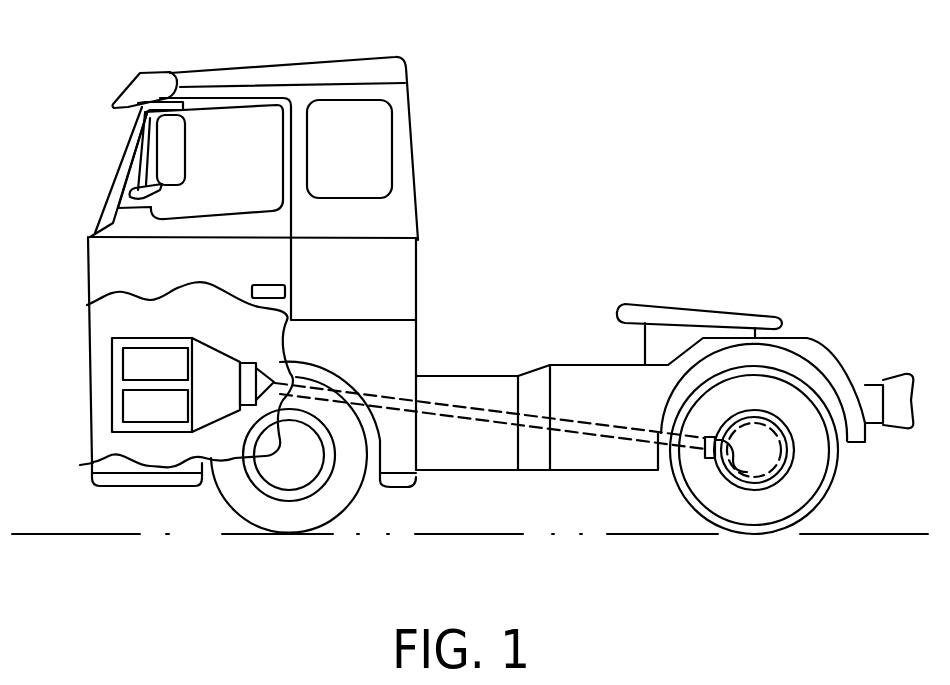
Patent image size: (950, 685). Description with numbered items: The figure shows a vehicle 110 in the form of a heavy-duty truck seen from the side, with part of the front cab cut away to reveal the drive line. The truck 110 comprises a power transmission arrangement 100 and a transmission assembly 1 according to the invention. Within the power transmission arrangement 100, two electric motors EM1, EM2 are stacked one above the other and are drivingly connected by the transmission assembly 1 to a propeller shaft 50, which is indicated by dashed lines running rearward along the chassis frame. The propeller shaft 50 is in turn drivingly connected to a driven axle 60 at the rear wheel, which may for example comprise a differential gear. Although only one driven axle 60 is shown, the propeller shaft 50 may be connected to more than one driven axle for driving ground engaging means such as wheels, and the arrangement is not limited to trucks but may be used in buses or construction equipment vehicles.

The vehicle 110 is at (496, 295).
The power transmission arrangement 100 is at (147, 434).
The electric motor EM1 is at (122, 363).
The electric motor EM2 is at (122, 407).
The transmission assembly 1 is at (217, 392).
The propeller shaft 50 is at (492, 422).
The driven axle 60 is at (753, 452).